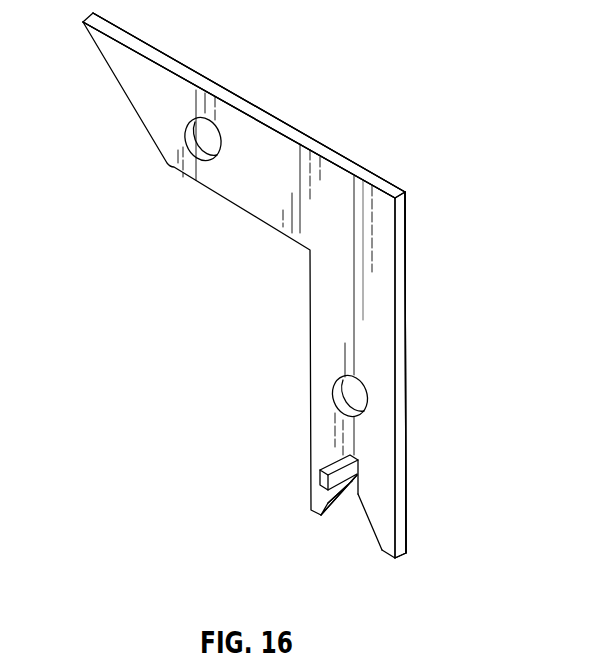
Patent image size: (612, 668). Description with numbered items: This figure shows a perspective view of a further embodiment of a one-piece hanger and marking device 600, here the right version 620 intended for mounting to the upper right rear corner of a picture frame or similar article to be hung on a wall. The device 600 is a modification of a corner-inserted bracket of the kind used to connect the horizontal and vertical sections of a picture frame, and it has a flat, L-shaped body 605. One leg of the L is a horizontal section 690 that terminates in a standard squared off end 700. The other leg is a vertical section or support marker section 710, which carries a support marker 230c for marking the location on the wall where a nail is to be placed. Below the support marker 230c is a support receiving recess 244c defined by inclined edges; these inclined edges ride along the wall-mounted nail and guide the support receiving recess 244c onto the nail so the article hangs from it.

The squared off end 700 is at (127, 93).
The horizontal section 690 is at (241, 92).
The one-piece hanger and marking device 600 is at (438, 105).
The right version 620 is at (434, 171).
The L-shaped body 605 is at (424, 249).
The support marker section 710 is at (410, 406).
The support marker 230c is at (327, 463).
The support receiving recess 244c is at (346, 527).